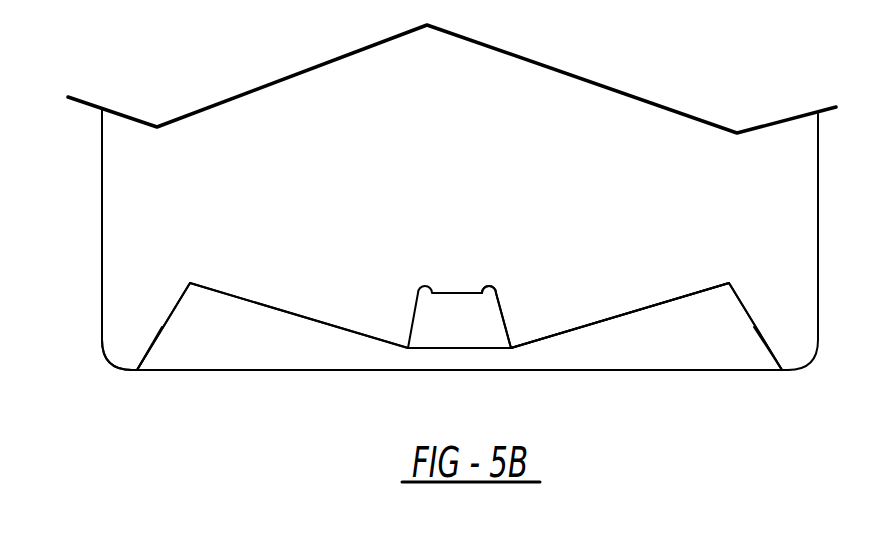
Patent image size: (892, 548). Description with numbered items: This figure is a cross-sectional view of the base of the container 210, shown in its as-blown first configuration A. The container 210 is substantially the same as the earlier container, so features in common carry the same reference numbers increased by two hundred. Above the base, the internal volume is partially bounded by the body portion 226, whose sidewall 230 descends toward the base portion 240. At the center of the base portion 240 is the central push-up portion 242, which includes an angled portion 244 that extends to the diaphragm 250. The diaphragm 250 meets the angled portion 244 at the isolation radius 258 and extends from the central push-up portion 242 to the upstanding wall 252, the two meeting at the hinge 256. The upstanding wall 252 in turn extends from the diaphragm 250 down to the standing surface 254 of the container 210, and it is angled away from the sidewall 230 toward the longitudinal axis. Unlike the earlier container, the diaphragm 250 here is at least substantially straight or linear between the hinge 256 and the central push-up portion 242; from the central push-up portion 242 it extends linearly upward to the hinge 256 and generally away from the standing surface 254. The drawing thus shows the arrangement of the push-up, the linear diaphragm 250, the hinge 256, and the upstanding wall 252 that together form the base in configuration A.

The container 210 is at (70, 134).
The body portion 226 is at (102, 312).
The sidewall 230 is at (102, 230).
The base portion 240 is at (285, 376).
The central push-up portion 242 is at (459, 292).
The angled portion 244 is at (503, 325).
The diaphragm 250 is at (305, 317).
The upstanding wall 252 is at (162, 327).
The standing surface 254 is at (135, 370).
The hinge 256 is at (190, 283).
The isolation radius 258 is at (408, 350).
The as-blown first configuration A is at (592, 324).